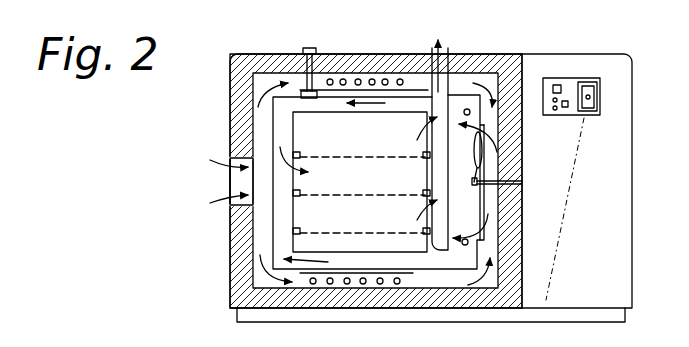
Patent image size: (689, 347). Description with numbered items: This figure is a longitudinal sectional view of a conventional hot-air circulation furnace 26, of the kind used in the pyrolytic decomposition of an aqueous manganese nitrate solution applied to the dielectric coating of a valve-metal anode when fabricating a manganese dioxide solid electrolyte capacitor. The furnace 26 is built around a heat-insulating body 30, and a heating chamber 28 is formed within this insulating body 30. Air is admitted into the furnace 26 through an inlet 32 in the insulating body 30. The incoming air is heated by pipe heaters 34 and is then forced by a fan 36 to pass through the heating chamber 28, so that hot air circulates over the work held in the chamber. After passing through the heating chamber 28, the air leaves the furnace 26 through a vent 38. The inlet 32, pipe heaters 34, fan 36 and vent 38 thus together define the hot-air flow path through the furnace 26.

The furnace 26 is at (222, 106).
The heating chamber 28 is at (378, 151).
The heat-insulating body 30 is at (392, 54).
The inlet 32 is at (230, 204).
The pipe heaters 34 is at (346, 73).
The fan 36 is at (483, 142).
The vent 38 is at (446, 54).